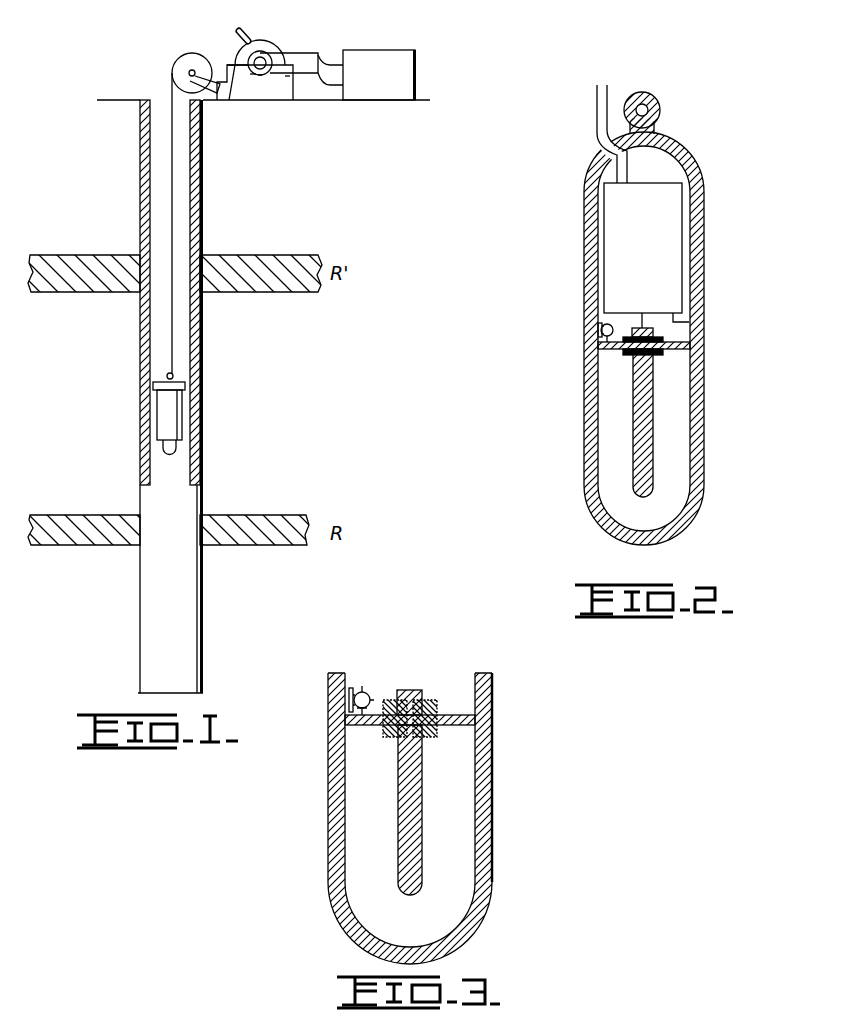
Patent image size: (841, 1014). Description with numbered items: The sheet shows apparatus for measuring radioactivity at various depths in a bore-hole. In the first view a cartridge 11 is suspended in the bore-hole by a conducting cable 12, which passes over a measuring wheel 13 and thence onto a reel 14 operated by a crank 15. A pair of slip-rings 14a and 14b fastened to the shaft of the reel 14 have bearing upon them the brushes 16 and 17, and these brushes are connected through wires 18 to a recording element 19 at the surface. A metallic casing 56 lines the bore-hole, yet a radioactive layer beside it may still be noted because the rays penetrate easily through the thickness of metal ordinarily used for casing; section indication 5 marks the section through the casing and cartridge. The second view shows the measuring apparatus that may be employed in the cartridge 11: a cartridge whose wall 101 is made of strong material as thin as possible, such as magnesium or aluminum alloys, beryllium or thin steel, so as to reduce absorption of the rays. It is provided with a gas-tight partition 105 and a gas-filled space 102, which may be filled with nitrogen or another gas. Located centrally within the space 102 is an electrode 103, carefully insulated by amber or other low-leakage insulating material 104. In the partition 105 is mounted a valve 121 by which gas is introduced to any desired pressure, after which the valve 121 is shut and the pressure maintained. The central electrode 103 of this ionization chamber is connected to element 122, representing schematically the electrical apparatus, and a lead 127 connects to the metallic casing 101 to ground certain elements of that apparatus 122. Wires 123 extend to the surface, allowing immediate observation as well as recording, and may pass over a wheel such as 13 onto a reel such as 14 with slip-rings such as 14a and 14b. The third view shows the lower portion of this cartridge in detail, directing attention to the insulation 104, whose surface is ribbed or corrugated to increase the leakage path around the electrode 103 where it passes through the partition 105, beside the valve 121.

In FIG. 1, the section line 5- 5 is at (179, 368).
In FIG. 1, the cartridge 11 is at (183, 430).
In FIG. 1, the conducting cable 12 is at (173, 203).
In FIG. 1, the measuring wheel 13 is at (178, 63).
In FIG. 1, the reel 14 is at (270, 46).
In FIG. 1, the slip-ring 14a is at (258, 75).
In FIG. 1, the slip-ring 14b is at (253, 74).
In FIG. 1, the crank 15 is at (237, 31).
In FIG. 1, the brush 16 is at (285, 76).
In FIG. 1, the brush 17 is at (287, 55).
In FIG. 1, the wires 18 is at (319, 53).
In FIG. 1, the recording element 19 is at (379, 75).
In FIG. 1, the metallic casing 56 is at (203, 147).
In FIG. 2, the cartridge wall 101 is at (703, 483).
In FIG. 3, the cartridge wall 101 is at (492, 877).
In FIG. 2, the gas-filled space 102 is at (675, 451).
In FIG. 3, the gas-filled space 102 is at (455, 843).
In FIG. 2, the electrode 103 is at (655, 405).
In FIG. 3, the electrode 103 is at (423, 822).
In FIG. 2, the insulating material 104 is at (627, 355).
In FIG. 3, the insulating material 104 is at (428, 705).
In FIG. 2, the gas-tight partition 105 is at (680, 350).
In FIG. 3, the gas-tight partition 105 is at (453, 727).
In FIG. 2, the valve 121 is at (599, 317).
In FIG. 3, the valve 121 is at (380, 668).
In FIG. 2, the electrical apparatus 122 is at (670, 243).
In FIG. 2, the wires 123 is at (596, 110).
In FIG. 2, the lead 127 is at (691, 323).